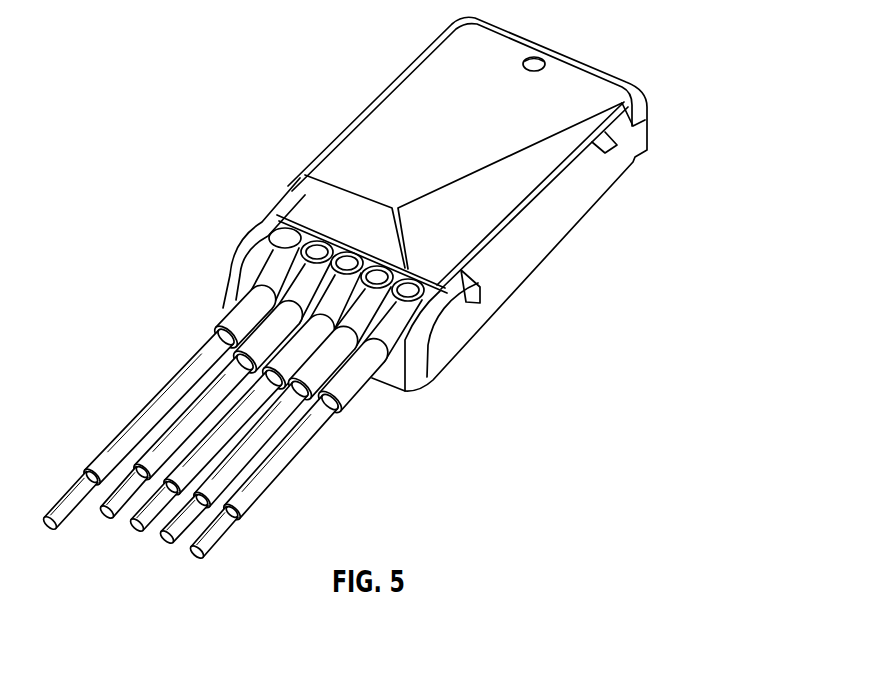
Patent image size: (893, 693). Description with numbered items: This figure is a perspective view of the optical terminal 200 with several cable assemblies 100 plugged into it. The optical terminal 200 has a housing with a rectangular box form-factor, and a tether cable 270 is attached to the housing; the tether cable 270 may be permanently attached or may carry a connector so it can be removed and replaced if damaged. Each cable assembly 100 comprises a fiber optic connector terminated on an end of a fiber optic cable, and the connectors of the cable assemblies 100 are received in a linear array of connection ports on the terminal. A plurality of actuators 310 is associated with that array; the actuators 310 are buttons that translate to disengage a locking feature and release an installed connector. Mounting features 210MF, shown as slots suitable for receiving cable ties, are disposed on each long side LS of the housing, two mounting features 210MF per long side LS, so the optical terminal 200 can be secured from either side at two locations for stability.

The optical terminal 200 is at (335, 160).
The mounting features 210MF is at (427, 47).
The actuators 310 is at (347, 258).
The long side LS is at (545, 240).
The tether cable 270 is at (92, 470).
The cable assembly 100 is at (215, 392).